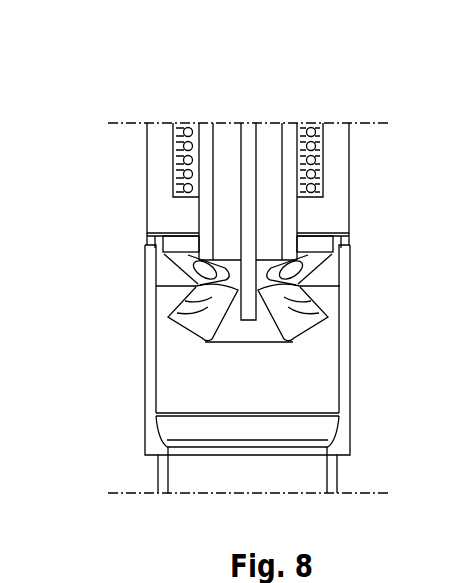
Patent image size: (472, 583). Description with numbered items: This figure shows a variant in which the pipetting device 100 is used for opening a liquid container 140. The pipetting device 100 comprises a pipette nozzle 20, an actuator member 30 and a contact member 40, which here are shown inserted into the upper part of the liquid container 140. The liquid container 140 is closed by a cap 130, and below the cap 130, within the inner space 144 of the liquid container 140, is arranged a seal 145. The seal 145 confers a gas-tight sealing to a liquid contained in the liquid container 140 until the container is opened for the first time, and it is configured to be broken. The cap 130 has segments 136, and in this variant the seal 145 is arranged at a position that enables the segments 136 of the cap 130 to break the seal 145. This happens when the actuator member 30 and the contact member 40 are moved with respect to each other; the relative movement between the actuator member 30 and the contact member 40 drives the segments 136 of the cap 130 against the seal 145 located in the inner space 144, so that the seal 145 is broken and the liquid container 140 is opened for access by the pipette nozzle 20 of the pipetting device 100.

The pipetting device 100 is at (169, 98).
The contact member 40 is at (146, 163).
The pipette nozzle 20 is at (296, 207).
The actuator member 30 is at (255, 217).
The cap 130 is at (147, 238).
The segments 136 is at (170, 312).
The liquid container 140 is at (146, 403).
The inner space 144 is at (323, 392).
The seal 145 is at (310, 340).